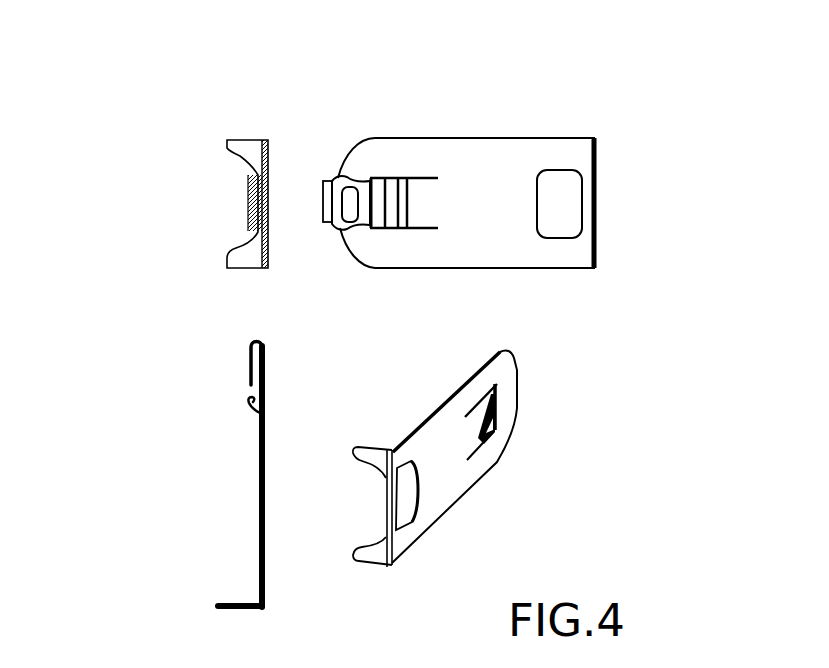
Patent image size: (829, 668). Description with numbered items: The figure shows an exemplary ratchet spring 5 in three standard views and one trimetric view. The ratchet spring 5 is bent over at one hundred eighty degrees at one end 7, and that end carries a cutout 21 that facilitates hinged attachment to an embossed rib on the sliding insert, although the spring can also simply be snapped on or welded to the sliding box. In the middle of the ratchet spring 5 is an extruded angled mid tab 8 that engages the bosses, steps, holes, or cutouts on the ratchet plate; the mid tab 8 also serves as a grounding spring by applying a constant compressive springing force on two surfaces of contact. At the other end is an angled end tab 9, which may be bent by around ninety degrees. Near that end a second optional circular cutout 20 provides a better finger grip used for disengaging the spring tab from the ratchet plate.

The ratchet spring 5 is at (445, 122).
The end 7 is at (239, 327).
The extruded angled mid tab 8 is at (229, 412).
The angled end tab 9 is at (208, 132).
The second optional (circular) cutout 20 is at (572, 156).
The cutout 21 is at (345, 166).